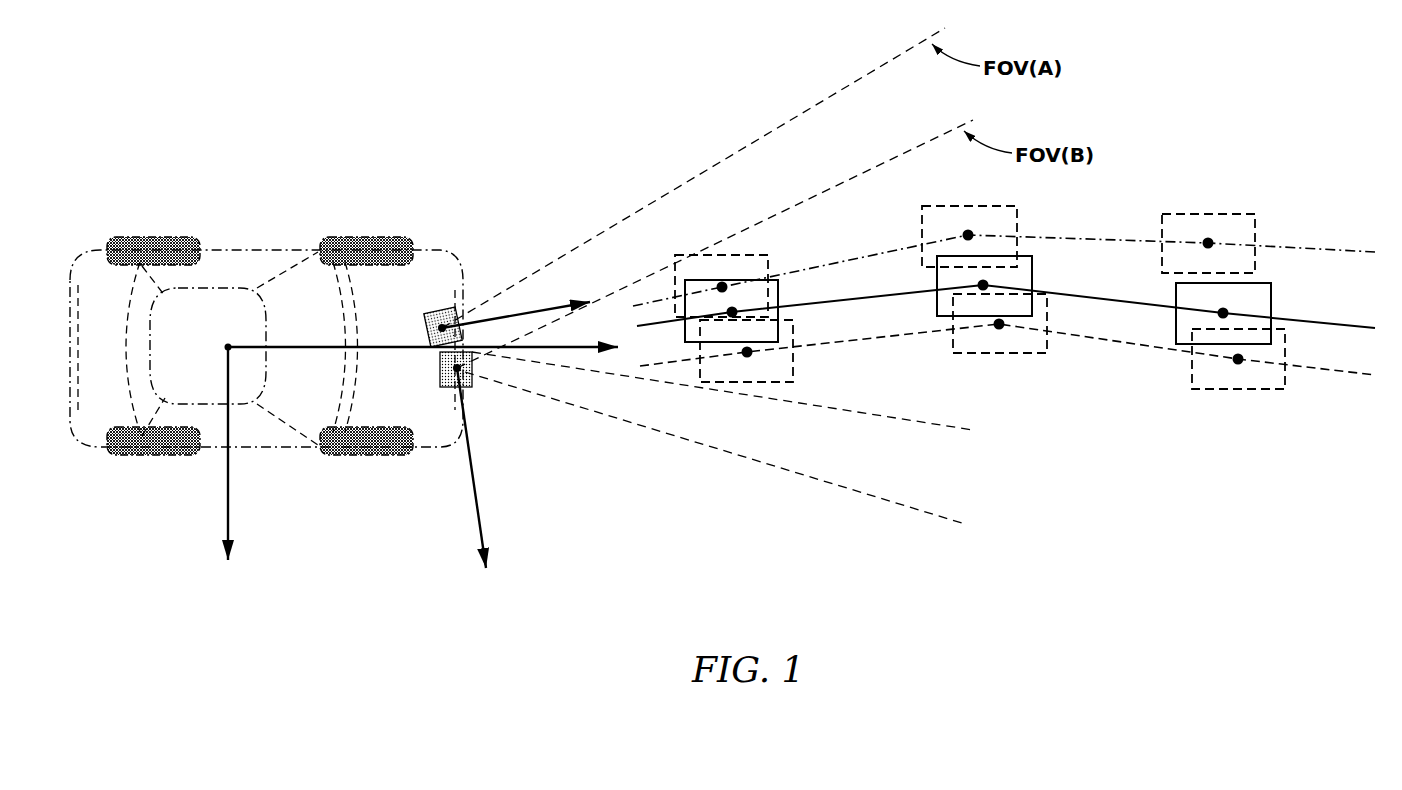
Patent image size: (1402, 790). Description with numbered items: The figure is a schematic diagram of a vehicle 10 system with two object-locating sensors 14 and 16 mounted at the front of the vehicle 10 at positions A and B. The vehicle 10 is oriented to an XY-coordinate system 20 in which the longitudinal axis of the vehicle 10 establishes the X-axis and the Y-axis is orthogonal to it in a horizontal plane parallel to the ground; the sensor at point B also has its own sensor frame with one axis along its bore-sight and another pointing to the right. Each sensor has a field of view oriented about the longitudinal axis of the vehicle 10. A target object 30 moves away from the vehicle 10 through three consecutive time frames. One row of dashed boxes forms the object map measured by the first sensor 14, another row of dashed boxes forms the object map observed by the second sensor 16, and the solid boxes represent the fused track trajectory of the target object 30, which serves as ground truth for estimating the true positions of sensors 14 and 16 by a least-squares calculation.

The vehicle 10 is at (247, 287).
The first object-locating sensor 14 is at (440, 310).
The second object-locating sensor 16 is at (473, 377).
The XY-coordinate system 20 is at (226, 490).
The target object 30 is at (778, 280).